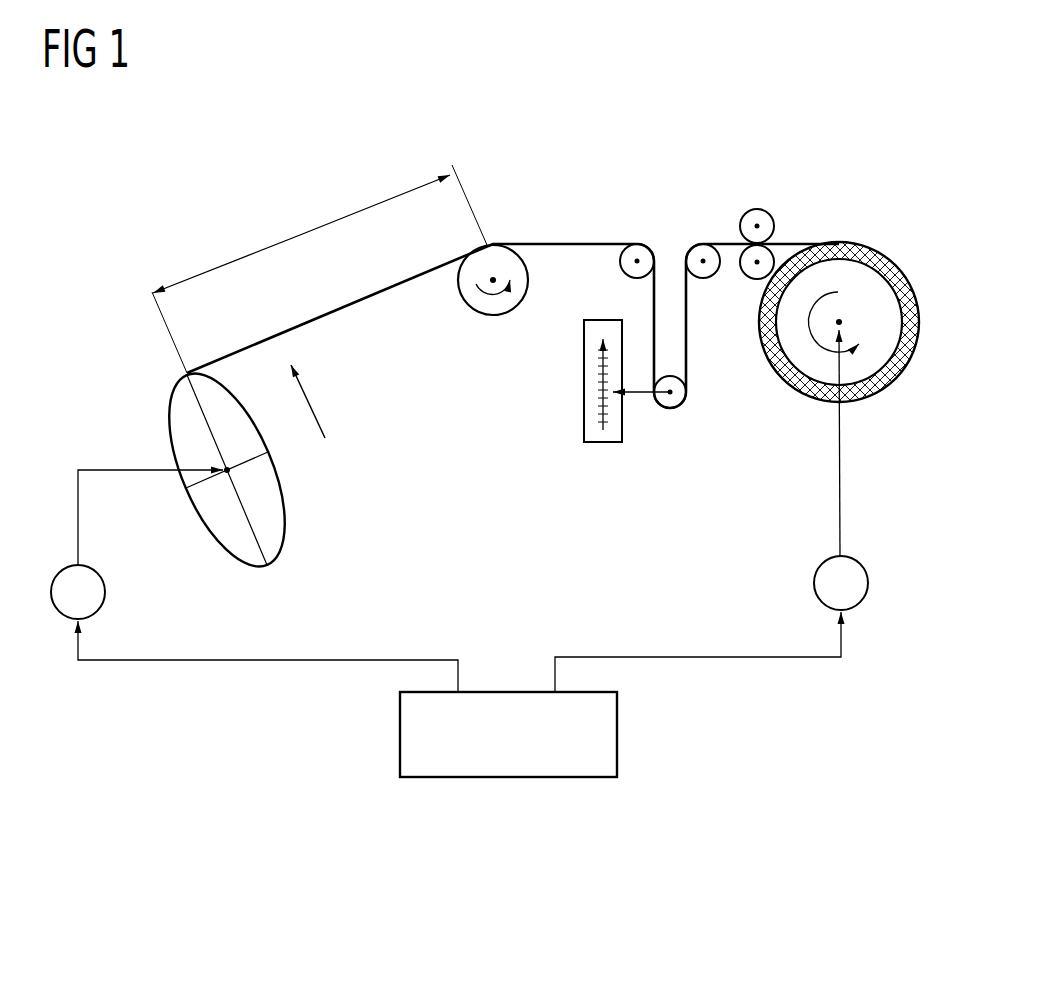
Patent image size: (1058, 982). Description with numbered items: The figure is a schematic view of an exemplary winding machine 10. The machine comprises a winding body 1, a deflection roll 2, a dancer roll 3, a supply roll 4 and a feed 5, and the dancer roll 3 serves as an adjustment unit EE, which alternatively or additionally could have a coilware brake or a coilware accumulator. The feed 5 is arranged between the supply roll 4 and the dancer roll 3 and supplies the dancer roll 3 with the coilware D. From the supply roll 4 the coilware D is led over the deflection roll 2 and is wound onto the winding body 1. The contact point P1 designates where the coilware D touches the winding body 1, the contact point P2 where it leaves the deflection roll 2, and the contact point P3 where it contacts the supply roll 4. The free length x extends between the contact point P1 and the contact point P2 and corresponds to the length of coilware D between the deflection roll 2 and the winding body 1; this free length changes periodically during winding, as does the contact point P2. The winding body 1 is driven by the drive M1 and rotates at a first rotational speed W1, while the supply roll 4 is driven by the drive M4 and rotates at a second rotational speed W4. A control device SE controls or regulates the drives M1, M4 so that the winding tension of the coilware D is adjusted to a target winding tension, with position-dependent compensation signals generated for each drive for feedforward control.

The winding machine 10 is at (617, 116).
The winding body 1 is at (287, 527).
The deflection roll 2 is at (512, 323).
The dancer roll 3 is at (677, 421).
The supply roll 4 is at (894, 222).
The feed 5 is at (728, 292).
The coilware D is at (389, 300).
The free length x is at (298, 234).
The contact point of the coilware on the winding body P1 is at (185, 373).
The contact point of the coilware on the deflection roll P2 is at (488, 242).
The contact point of the coilware on the supply roll P3 is at (839, 243).
The adjustment unit EE is at (687, 203).
The first rotational speed W1 is at (313, 403).
The second rotational speed W4 is at (819, 398).
The drive M1 is at (137, 544).
The drive M4 is at (841, 470).
The control device SE is at (505, 778).